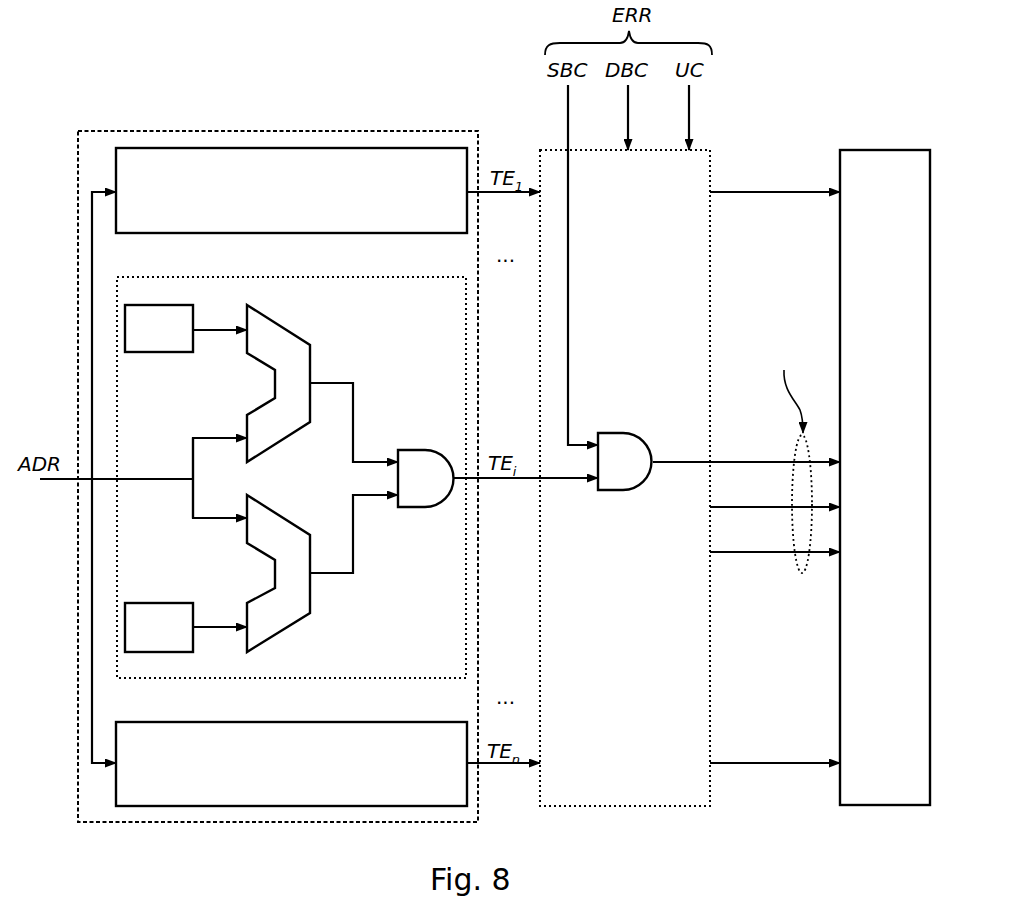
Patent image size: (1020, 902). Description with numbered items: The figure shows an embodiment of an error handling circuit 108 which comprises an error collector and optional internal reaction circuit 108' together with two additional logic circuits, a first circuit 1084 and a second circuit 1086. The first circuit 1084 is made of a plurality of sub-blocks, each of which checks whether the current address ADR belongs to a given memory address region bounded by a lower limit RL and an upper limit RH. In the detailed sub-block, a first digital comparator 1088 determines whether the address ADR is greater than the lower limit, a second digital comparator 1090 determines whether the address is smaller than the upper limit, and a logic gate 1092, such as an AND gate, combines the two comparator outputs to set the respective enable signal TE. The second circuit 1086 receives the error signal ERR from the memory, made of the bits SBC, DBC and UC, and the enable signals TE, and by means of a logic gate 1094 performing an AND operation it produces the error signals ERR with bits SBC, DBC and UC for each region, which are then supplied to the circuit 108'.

The error handling circuit 108 is at (504, 412).
The error collector and optional internal reaction circuit 108' is at (880, 511).
The first circuit 1084 is at (135, 129).
The second circuit 1086 is at (698, 160).
The first digital comparator 1088 is at (290, 608).
The second digital comparator 1090 is at (303, 348).
The logic gate 1092 is at (421, 458).
The logic gate 1094 is at (622, 450).